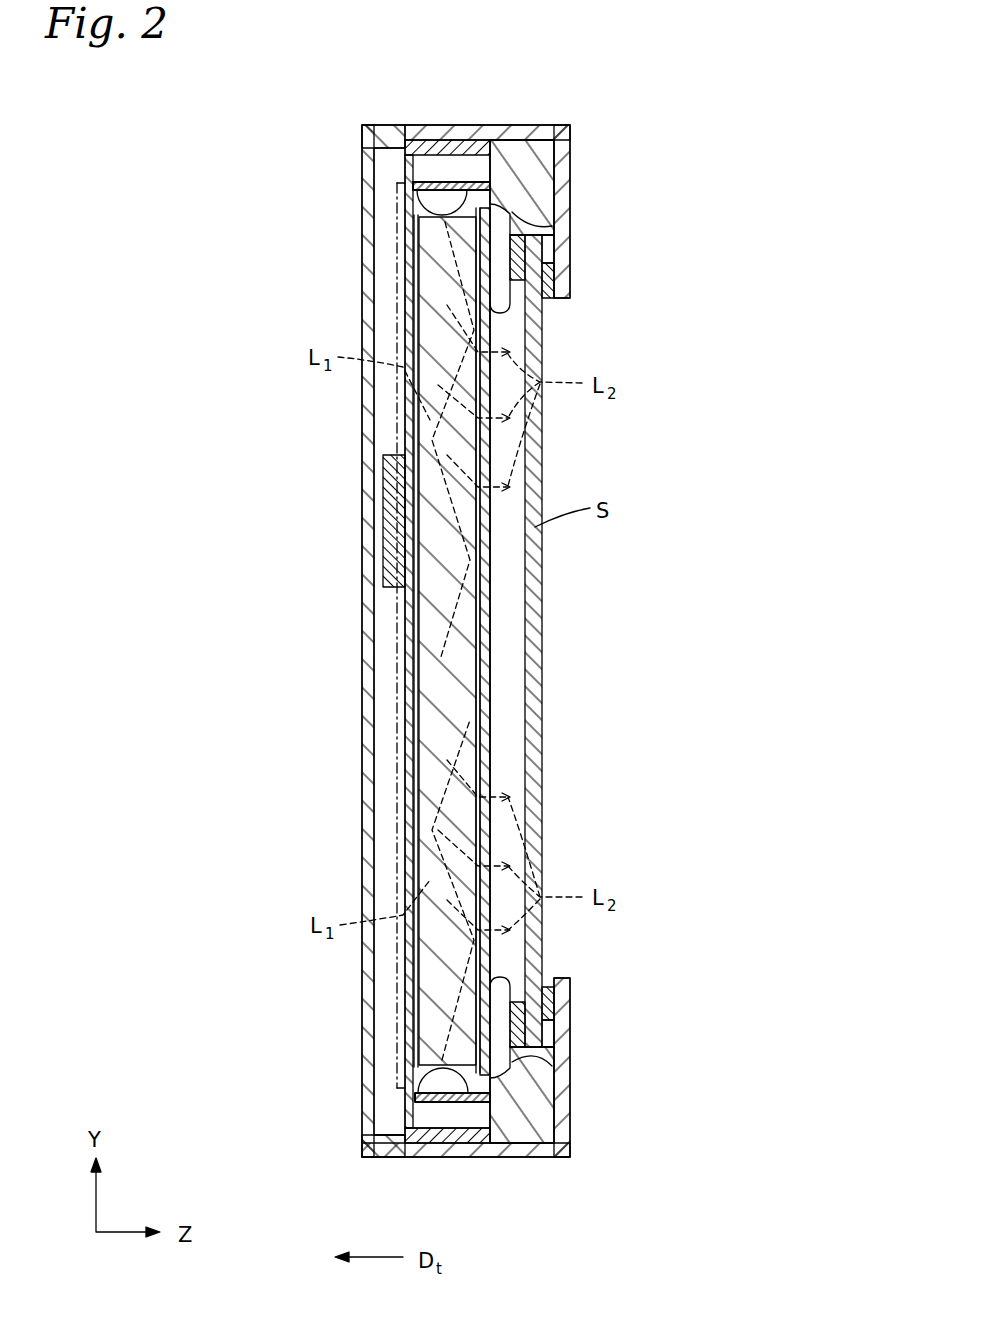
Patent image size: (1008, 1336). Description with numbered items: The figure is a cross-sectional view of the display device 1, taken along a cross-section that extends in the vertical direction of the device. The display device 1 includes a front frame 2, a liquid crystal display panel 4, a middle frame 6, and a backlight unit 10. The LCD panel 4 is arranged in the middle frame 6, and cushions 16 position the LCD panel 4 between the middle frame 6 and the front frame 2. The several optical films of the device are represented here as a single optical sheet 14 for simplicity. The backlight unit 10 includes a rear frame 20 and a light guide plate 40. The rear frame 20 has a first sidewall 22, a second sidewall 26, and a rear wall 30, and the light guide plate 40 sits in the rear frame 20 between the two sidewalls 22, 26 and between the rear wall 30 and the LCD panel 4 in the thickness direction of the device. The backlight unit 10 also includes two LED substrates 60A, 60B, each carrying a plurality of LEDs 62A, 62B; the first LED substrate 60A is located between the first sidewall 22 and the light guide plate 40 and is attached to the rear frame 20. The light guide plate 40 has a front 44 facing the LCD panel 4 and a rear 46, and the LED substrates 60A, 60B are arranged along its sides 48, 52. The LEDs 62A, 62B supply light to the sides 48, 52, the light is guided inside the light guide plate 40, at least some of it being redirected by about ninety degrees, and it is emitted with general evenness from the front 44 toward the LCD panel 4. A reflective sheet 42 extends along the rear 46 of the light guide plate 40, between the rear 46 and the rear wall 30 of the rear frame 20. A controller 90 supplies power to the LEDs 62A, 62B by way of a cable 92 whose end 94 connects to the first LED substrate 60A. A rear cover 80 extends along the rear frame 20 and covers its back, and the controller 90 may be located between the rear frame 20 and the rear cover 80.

The display device 1 is at (792, 126).
The front frame 2 is at (572, 1127).
The liquid crystal display (LCD) panel 4 is at (542, 690).
The middle frame 6 is at (558, 165).
The backlight unit 10 is at (395, 160).
The optical sheet 14 is at (492, 340).
The cushion 16 is at (552, 266).
The rear frame 20 is at (448, 165).
The first sidewall 22 is at (458, 1130).
The sidewall 26 is at (458, 155).
The rear wall 30 is at (422, 345).
The light guide plate 40 is at (430, 780).
The reflective sheet 42 is at (421, 1133).
The front 44 is at (483, 622).
The rear 46 is at (417, 627).
The side 48 is at (500, 1150).
The side 52 is at (523, 172).
The first LED substrate 60A is at (500, 1083).
The LED substrate 60B is at (502, 199).
The LEDs 62A is at (437, 1075).
The LEDs 62B is at (440, 207).
The rear cover 80 is at (365, 165).
The controller 90 is at (385, 490).
The cable 92 is at (397, 693).
The end 94 is at (397, 1090).